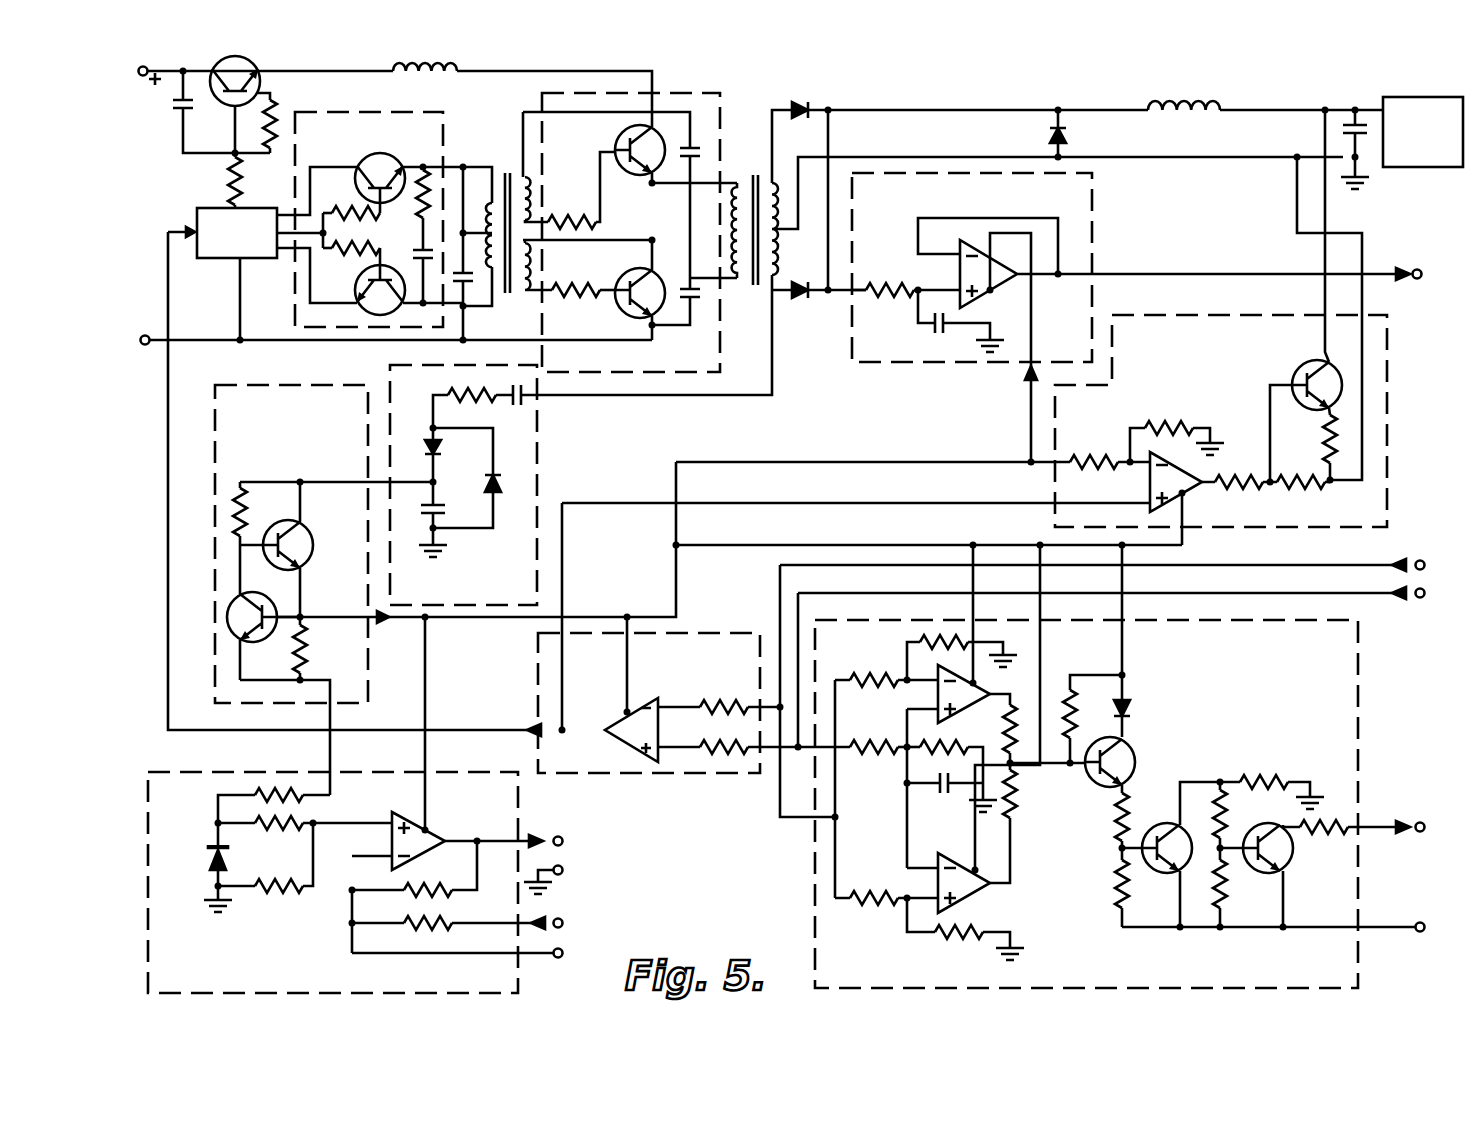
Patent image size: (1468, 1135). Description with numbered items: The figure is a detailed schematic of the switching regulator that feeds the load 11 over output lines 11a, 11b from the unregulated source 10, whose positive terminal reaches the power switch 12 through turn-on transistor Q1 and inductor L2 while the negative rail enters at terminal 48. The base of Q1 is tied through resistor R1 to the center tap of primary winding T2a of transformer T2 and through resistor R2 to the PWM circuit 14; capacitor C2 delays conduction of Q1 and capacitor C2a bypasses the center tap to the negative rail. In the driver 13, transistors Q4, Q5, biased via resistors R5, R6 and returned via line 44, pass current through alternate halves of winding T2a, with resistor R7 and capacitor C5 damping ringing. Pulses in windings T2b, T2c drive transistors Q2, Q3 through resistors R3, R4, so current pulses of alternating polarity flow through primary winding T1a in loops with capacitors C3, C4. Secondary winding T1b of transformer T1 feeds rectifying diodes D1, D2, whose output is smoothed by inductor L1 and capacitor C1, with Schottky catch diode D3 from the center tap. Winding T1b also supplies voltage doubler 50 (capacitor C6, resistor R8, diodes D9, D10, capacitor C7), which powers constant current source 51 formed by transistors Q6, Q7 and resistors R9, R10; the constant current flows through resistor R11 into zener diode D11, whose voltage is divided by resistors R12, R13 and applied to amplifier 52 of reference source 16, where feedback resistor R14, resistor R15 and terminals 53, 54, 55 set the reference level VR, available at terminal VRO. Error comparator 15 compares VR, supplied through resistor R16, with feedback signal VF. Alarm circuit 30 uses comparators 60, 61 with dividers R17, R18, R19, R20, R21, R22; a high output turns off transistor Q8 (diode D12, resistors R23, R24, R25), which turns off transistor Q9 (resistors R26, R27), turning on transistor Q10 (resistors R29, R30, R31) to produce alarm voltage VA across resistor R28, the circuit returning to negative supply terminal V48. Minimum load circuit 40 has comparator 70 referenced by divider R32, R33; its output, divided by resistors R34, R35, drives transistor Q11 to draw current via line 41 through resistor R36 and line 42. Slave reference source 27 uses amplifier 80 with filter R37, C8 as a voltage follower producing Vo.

The unregulated d-c. source 10 is at (135, 112).
The load 11 is at (1422, 97).
The output line 11a is at (1360, 105).
The output line 11b is at (1372, 162).
The power switch 12 is at (909, 224).
The driver circuit 13 is at (384, 189).
The PWM circuit 14 is at (215, 262).
The error comparator 15 is at (694, 727).
The reference signal source 16 is at (357, 862).
The slave reference source 27 is at (1005, 319).
The alarm circuit 30 is at (1137, 796).
The minimum load circuit 40 is at (996, 413).
The line 41 is at (1330, 212).
The line 42 is at (1295, 216).
The line 44 is at (238, 310).
The -48 volt terminal 48 is at (386, 349).
The voltage doubler circuit 50 is at (501, 486).
The constant current source 51 is at (267, 590).
The differential amplifier 52 is at (432, 833).
The terminal 53 is at (562, 924).
The terminal 54 is at (559, 877).
The terminal 55 is at (473, 954).
The comparator 60 is at (975, 700).
The comparator 61 is at (978, 872).
The comparator 70 is at (1185, 495).
The operational amplifier 80 is at (1010, 286).
The transistor Q1 is at (245, 58).
The transistor Q2 is at (615, 136).
The transistor Q3 is at (645, 250).
The NPN transistor Q4 is at (358, 160).
The NPN transistor Q5 is at (357, 308).
The NPN transistor Q6 is at (305, 538).
The NPN transistor Q7 is at (278, 605).
The PNP transistor Q8 is at (1138, 745).
The NPN transistor Q9 is at (1160, 825).
The NPN transistor Q10 is at (1285, 875).
The transistor Q11 is at (1345, 388).
The resistor R1 is at (262, 123).
The resistor R2 is at (232, 185).
The resistor R3 is at (590, 214).
The resistor R4 is at (578, 296).
The resistor R5 is at (349, 199).
The resistor R6 is at (349, 264).
The resistor R7 is at (407, 208).
The resistor R8 is at (450, 395).
The resistor R9 is at (232, 512).
The resistor R10 is at (306, 652).
The resistor R11 is at (280, 790).
The resistor R12 is at (266, 832).
The resistor R13 is at (268, 892).
The feedback resistor R14 is at (428, 886).
The resistor R15 is at (446, 922).
The resistor R16 is at (722, 715).
The resistor R17 is at (866, 676).
The resistor R18 is at (934, 640).
The resistor R19 is at (878, 745).
The resistor R20 is at (925, 762).
The resistor R21 is at (875, 898).
The resistor R22 is at (958, 940).
The resistor R23 is at (1072, 690).
The resistor R24 is at (1018, 760).
The resistor R25 is at (1018, 800).
The resistor R26 is at (1112, 830).
The resistor R27 is at (1115, 895).
The resistor R28 is at (1318, 834).
The resistor R29 is at (1266, 776).
The resistor R30 is at (1215, 795).
The resistor R31 is at (1222, 915).
The resistor R32 is at (1090, 456).
The resistor R33 is at (1172, 426).
The resistor R34 is at (1262, 490).
The resistor R35 is at (1320, 490).
The resistor R36 is at (1324, 445).
The resistor R37 is at (898, 286).
The capacitor C1 is at (1348, 115).
The capacitor C2 is at (178, 110).
The capacitor C2a is at (452, 300).
The capacitor C3 is at (682, 160).
The capacitor C4 is at (680, 285).
The capacitor C5 is at (410, 270).
The capacitor C6 is at (528, 400).
The capacitor C7 is at (445, 525).
The capacitor C8 is at (930, 332).
The rectifying diode D1 is at (806, 98).
The rectifying diode D2 is at (803, 298).
The Schottky diode D3 is at (1068, 130).
The diode D9 is at (425, 448).
The diode D10 is at (505, 482).
The temperature-compensated zener diode D11 is at (212, 848).
The diode D12 is at (1130, 705).
The inductor L1 is at (1193, 100).
The inductor L2 is at (463, 68).
The transformer T1 is at (932, 252).
The primary transformer winding T1a is at (737, 285).
The secondary transformer winding T1b is at (778, 240).
The transformer T2 is at (532, 222).
The primary winding T2a is at (492, 290).
The secondary transformer winding T2b is at (535, 188).
The secondary transformer winding T2c is at (535, 268).
The output signal Vo is at (1256, 275).
The reference level VR is at (1119, 687).
The feedback signal VF is at (1127, 666).
The reference output terminal VRO is at (585, 843).
The alarm signal VA is at (1437, 828).
The -48 volt terminal V48 is at (1288, 940).